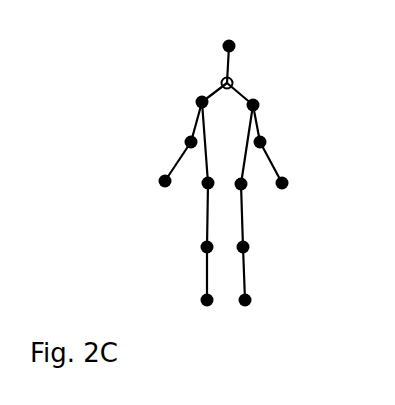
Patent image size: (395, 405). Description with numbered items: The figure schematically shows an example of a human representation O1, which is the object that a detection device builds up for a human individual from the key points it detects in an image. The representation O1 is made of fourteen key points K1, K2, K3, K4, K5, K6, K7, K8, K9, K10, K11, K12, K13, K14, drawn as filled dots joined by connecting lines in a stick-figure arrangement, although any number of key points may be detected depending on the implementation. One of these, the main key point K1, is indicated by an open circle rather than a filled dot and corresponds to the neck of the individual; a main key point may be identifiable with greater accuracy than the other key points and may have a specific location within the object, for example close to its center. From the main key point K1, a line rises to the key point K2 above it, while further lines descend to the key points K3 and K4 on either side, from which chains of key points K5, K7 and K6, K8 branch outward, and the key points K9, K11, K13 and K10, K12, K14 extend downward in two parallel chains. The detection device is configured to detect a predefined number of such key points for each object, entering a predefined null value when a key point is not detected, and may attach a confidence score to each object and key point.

The human representation O1 is at (282, 42).
The main key point K1 is at (244, 79).
The key point K2 is at (244, 40).
The key point K3 is at (186, 92).
The key point K4 is at (271, 105).
The key point K5 is at (171, 141).
The key point K6 is at (280, 141).
The key point K7 is at (146, 181).
The key point K8 is at (301, 183).
The key point K9 is at (192, 194).
The key point K10 is at (262, 197).
The key point K11 is at (184, 248).
The key point K12 is at (264, 248).
The key point K13 is at (183, 301).
The key point K14 is at (268, 301).